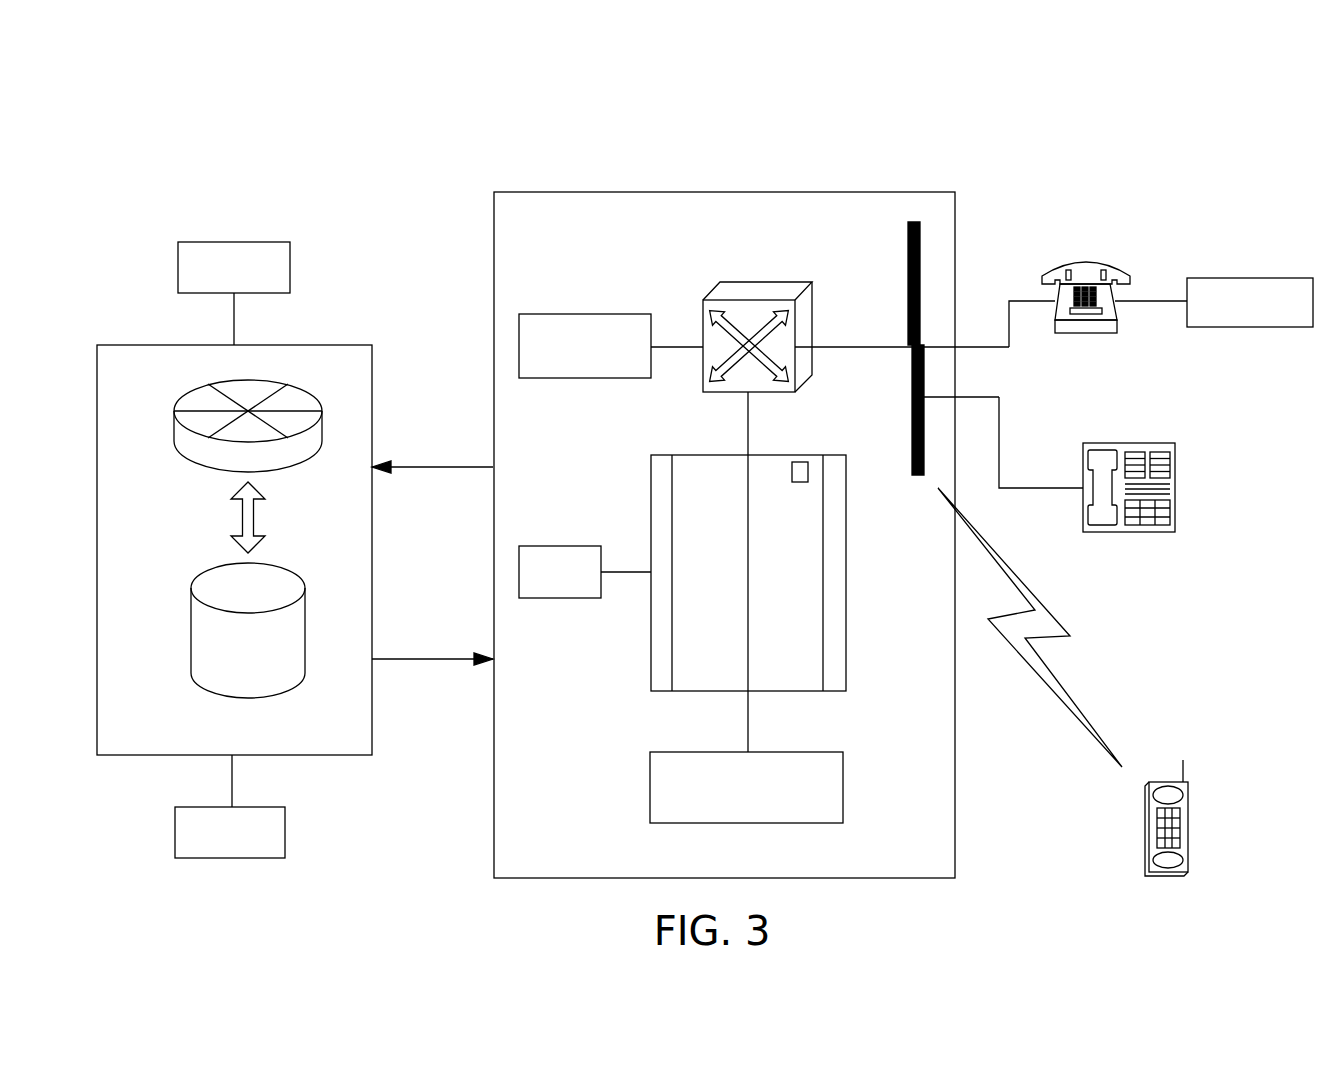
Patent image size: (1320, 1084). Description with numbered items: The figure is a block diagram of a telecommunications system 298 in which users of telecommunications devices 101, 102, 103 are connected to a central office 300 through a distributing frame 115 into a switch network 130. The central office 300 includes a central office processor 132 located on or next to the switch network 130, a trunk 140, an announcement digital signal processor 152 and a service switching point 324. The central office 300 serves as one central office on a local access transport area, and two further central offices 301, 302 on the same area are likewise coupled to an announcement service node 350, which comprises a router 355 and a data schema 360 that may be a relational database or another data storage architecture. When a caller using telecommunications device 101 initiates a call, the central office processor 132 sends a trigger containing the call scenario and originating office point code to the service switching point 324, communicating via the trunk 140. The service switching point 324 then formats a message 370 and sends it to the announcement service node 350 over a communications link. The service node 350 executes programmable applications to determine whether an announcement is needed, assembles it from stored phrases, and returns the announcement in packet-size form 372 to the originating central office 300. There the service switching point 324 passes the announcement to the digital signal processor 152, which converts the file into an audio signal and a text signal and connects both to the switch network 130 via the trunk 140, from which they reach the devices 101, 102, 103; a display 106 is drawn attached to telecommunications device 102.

The telecommunications system 298 is at (866, 113).
The central office 300 is at (850, 190).
The central office 301 is at (235, 242).
The central office 302 is at (287, 828).
The announcement service node 350 is at (312, 345).
The router 355 is at (198, 474).
The data schema 360 is at (190, 640).
The message 370 is at (432, 451).
The announcement in packet-size form 372 is at (432, 644).
The switch network 130 is at (768, 280).
The central office processor 132 is at (588, 312).
The trunk 140 is at (846, 572).
The announcement digital signal processor 152 is at (547, 544).
The service switching point 324 is at (845, 785).
The distributing frame 115 is at (908, 410).
The telecommunications device 102 is at (1050, 265).
The display 106 is at (1237, 327).
The telecommunications device 101 is at (1176, 485).
The telecommunications device 103 is at (1188, 822).